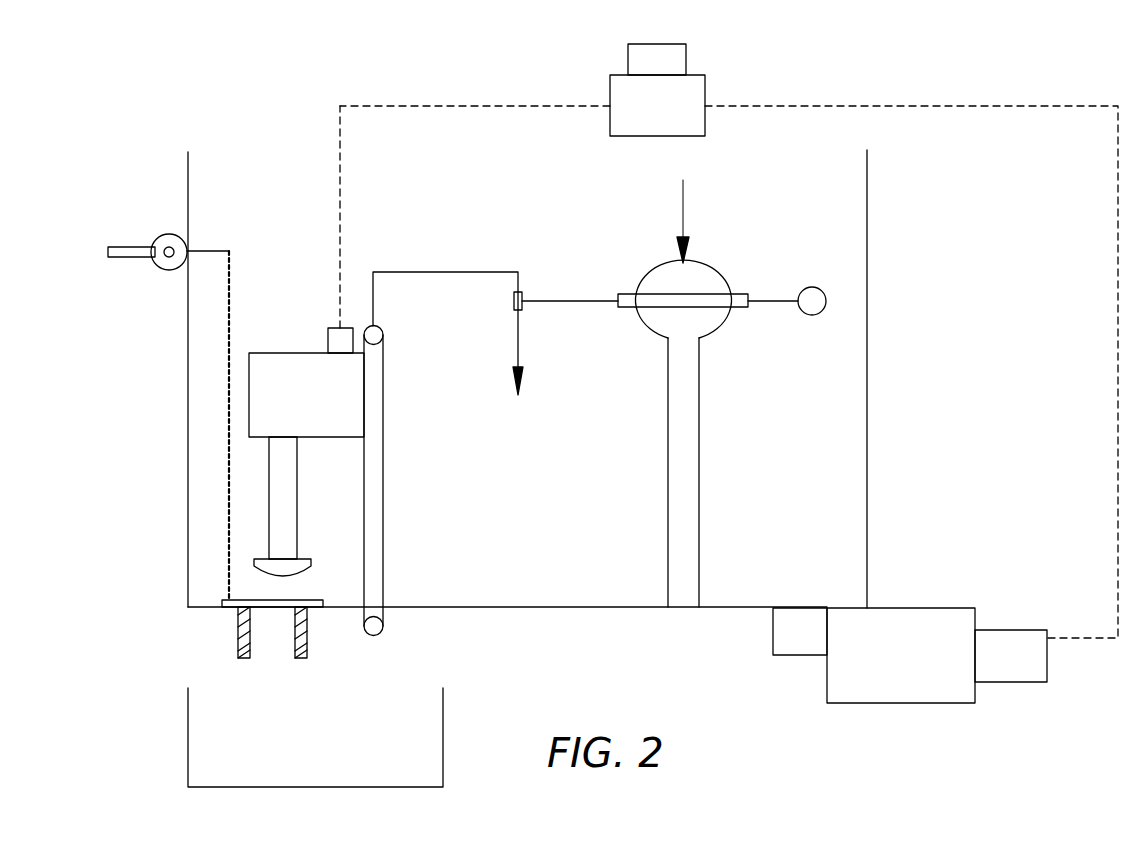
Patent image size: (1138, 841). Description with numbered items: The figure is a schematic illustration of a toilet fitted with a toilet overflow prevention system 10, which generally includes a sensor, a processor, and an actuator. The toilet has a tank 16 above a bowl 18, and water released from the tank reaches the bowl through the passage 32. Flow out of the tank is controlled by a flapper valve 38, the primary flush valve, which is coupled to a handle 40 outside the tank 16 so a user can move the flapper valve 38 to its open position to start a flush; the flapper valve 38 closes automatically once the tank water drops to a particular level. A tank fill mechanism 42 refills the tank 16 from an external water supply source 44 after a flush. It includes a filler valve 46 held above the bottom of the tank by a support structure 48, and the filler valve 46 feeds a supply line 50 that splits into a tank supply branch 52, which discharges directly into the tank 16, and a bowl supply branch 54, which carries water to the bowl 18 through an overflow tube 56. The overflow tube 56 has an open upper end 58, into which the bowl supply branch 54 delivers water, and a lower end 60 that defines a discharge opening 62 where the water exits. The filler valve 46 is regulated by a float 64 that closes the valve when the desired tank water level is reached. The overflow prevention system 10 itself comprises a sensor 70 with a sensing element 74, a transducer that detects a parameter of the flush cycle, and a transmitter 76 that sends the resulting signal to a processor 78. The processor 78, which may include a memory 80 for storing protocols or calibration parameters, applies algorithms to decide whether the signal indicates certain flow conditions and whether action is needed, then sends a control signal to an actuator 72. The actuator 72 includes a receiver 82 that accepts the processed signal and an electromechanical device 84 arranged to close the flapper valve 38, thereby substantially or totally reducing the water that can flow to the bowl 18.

The toilet overflow prevention system 10 is at (703, 44).
The tank 16 is at (867, 402).
The bowl 18 is at (443, 750).
The passage 32 is at (250, 640).
The flapper valve 38 is at (309, 600).
The handle 40 is at (162, 236).
The tank fill mechanism 42 is at (709, 381).
The water supply source 44 is at (685, 209).
The filler valve 46 is at (718, 333).
The support structure 48 is at (700, 497).
The supply line 50 is at (600, 294).
The tank supply branch 52 is at (518, 325).
The bowl supply branch 54 is at (470, 272).
The overflow tube 56 is at (413, 492).
The upper end 58 is at (383, 370).
The lower end 60 is at (383, 587).
The discharge opening 62 is at (383, 634).
The float 64 is at (820, 288).
The sensor 70 is at (900, 703).
The actuator 72 is at (306, 353).
The sensing element 74 is at (803, 656).
The transmitter 76 is at (1000, 682).
The processor 78 is at (705, 88).
The memory 80 is at (643, 44).
The receiver 82 is at (344, 326).
The electromechanical device 84 is at (298, 522).